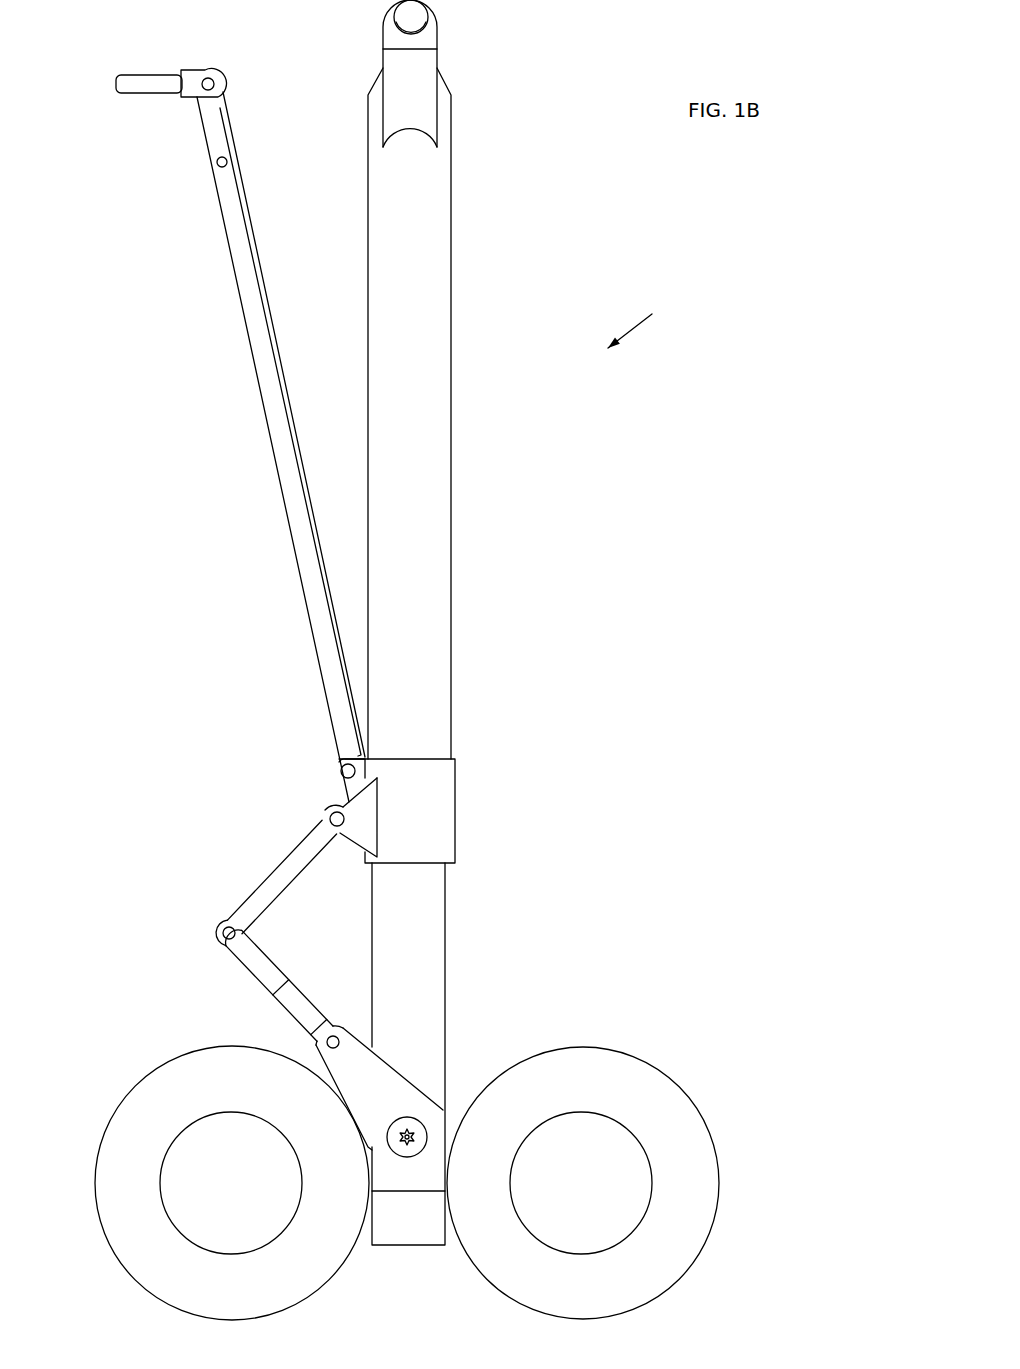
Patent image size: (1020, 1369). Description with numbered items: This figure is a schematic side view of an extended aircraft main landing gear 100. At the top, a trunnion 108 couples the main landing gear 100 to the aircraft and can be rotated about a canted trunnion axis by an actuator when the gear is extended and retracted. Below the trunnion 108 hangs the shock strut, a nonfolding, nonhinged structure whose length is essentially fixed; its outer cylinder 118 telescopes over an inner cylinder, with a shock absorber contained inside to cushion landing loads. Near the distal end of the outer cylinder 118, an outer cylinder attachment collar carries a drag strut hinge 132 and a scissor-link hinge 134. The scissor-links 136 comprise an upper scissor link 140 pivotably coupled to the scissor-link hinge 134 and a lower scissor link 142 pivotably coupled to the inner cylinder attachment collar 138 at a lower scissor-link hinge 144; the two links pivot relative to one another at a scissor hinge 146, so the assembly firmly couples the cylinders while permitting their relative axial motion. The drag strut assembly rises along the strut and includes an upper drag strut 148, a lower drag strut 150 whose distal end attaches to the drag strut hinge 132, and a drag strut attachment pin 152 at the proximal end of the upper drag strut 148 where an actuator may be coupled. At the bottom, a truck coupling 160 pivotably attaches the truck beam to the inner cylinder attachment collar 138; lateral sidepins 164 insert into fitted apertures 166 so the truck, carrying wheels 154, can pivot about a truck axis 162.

The main landing gear 100 is at (640, 317).
The trunnion 108 is at (428, 28).
The outer cylinder 118 is at (447, 360).
The drag strut hinge 132 is at (340, 770).
The scissor-link hinge 134 is at (350, 805).
The scissor-links 136 is at (243, 969).
The inner cylinder attachment collar 138 is at (413, 1097).
The upper scissor link 140 is at (293, 887).
The lower scissor link 142 is at (308, 1007).
The lower scissor-link hinge 144 is at (392, 1068).
The scissor hinge 146 is at (216, 926).
The upper drag strut 148 is at (228, 125).
The lower drag strut 150 is at (267, 400).
The drag strut attachment pin 152 is at (153, 95).
The wheels 154 is at (110, 1118).
The truck coupling 160 is at (385, 1240).
The truck axis 162 is at (412, 1130).
The lateral sidepins 164 is at (407, 1157).
The fitted apertures 166 is at (434, 1223).